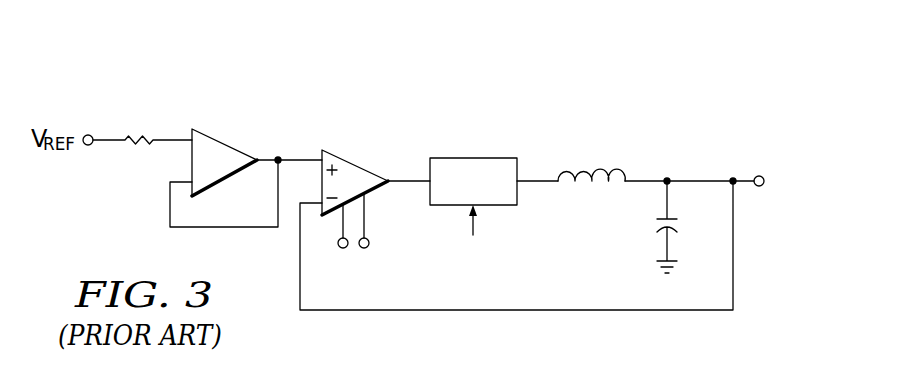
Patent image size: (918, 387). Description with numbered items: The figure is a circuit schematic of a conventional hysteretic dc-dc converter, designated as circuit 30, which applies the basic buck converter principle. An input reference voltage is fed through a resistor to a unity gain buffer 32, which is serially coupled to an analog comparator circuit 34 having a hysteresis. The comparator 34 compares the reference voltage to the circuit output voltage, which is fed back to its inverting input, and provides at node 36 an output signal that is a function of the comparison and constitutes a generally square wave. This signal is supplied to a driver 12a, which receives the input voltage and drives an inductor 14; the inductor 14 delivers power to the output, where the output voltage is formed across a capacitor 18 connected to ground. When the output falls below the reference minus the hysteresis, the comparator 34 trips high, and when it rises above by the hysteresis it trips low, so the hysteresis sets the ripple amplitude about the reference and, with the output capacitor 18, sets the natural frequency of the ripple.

The hysteretic dc-dc converter circuit 30 is at (309, 81).
The unity gain buffer 32 is at (172, 138).
The analog comparator circuit 34 is at (336, 156).
The node 36 is at (398, 178).
The driver 12a is at (472, 158).
The inductor 14 is at (598, 162).
The capacitor 18 is at (656, 224).